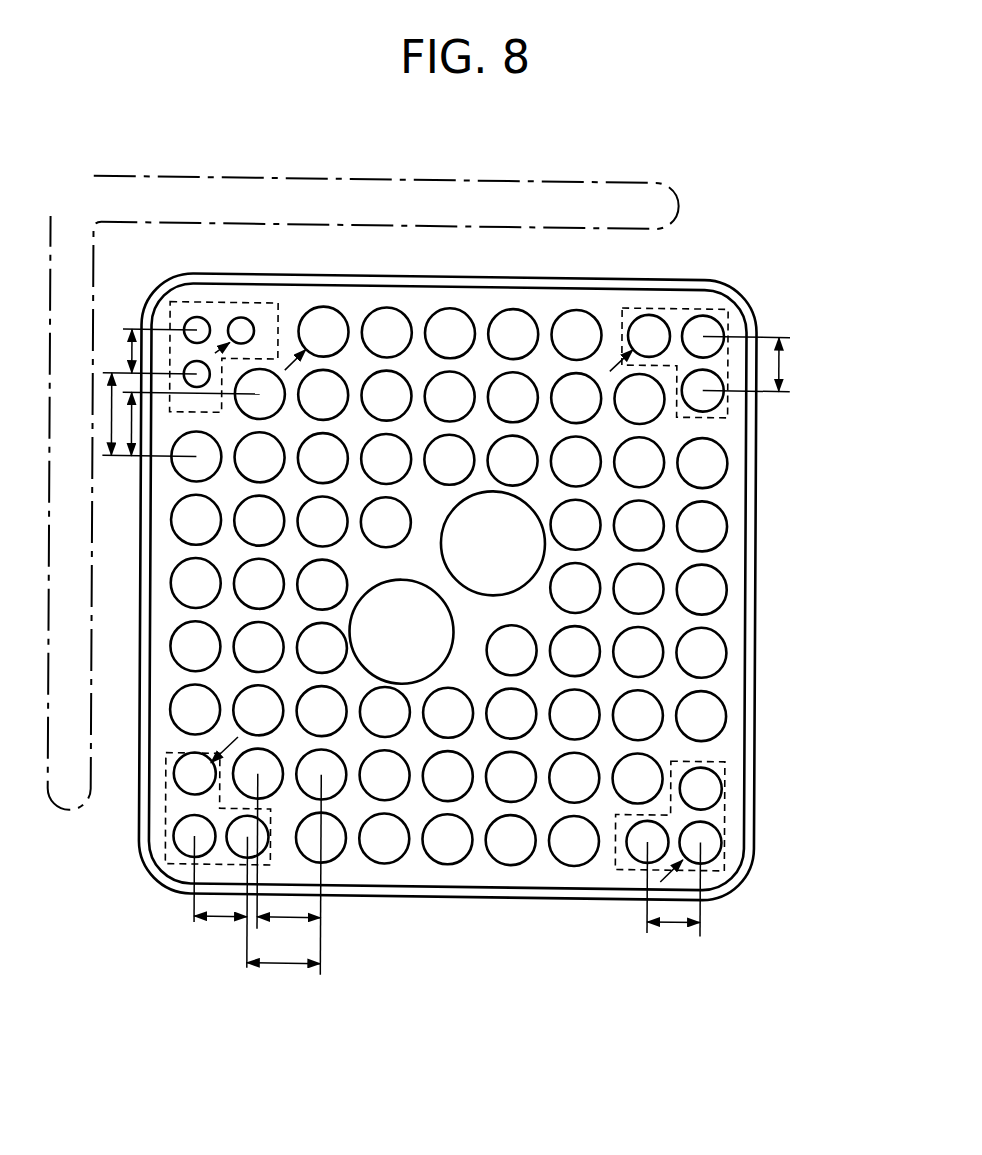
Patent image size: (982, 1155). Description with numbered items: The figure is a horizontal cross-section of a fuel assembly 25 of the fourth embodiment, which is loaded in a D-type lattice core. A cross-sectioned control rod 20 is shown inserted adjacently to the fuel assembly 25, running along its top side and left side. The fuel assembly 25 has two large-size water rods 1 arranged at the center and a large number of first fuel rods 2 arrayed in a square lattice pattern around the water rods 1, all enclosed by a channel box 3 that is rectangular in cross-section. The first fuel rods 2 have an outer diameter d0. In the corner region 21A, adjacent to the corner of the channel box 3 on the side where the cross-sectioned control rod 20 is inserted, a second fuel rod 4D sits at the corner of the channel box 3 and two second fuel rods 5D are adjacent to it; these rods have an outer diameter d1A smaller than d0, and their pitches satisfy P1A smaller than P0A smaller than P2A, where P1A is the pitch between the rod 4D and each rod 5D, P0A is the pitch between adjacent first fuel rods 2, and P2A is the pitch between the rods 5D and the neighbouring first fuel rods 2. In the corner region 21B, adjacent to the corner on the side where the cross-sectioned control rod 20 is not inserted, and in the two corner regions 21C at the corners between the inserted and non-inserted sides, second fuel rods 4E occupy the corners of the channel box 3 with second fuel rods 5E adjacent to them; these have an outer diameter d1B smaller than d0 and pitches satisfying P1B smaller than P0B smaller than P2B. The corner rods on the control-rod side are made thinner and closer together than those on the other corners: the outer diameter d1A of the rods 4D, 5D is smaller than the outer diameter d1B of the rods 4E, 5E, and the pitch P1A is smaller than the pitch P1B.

The cross-sectioned control rod 20 is at (556, 176).
The fuel assembly 25 is at (809, 485).
The channel box 3 is at (752, 677).
The water rod 1 is at (441, 632).
The first fuel rod 2 is at (728, 589).
The corner region 21A is at (204, 301).
The corner region 21B is at (618, 864).
The corner region 21C is at (737, 418).
The second fuel rod 4D is at (188, 322).
The second fuel rod 5D is at (201, 362).
The second fuel rod 4E is at (718, 314).
The second fuel rod 5E is at (645, 319).
The outer diameter of first fuel rods d0 is at (342, 312).
The outer diameter of second fuel rods 4D, 5D d1A is at (252, 317).
The outer diameter of second fuel rods 4E, 5E d1B is at (150, 830).
The pitch between second fuel rods 4D and 5D P1A is at (142, 352).
The pitch between second fuel rods 5D and first fuel rods P2A is at (131, 414).
The pitch between adjacent first fuel rods P0A is at (127, 427).
The pitch between second fuel rods 4E and 5E P1B is at (512, 652).
The pitch between adjacent first fuel rods P0B is at (289, 874).
The pitch between second fuel rods 5E and first fuel rods P2B is at (284, 985).